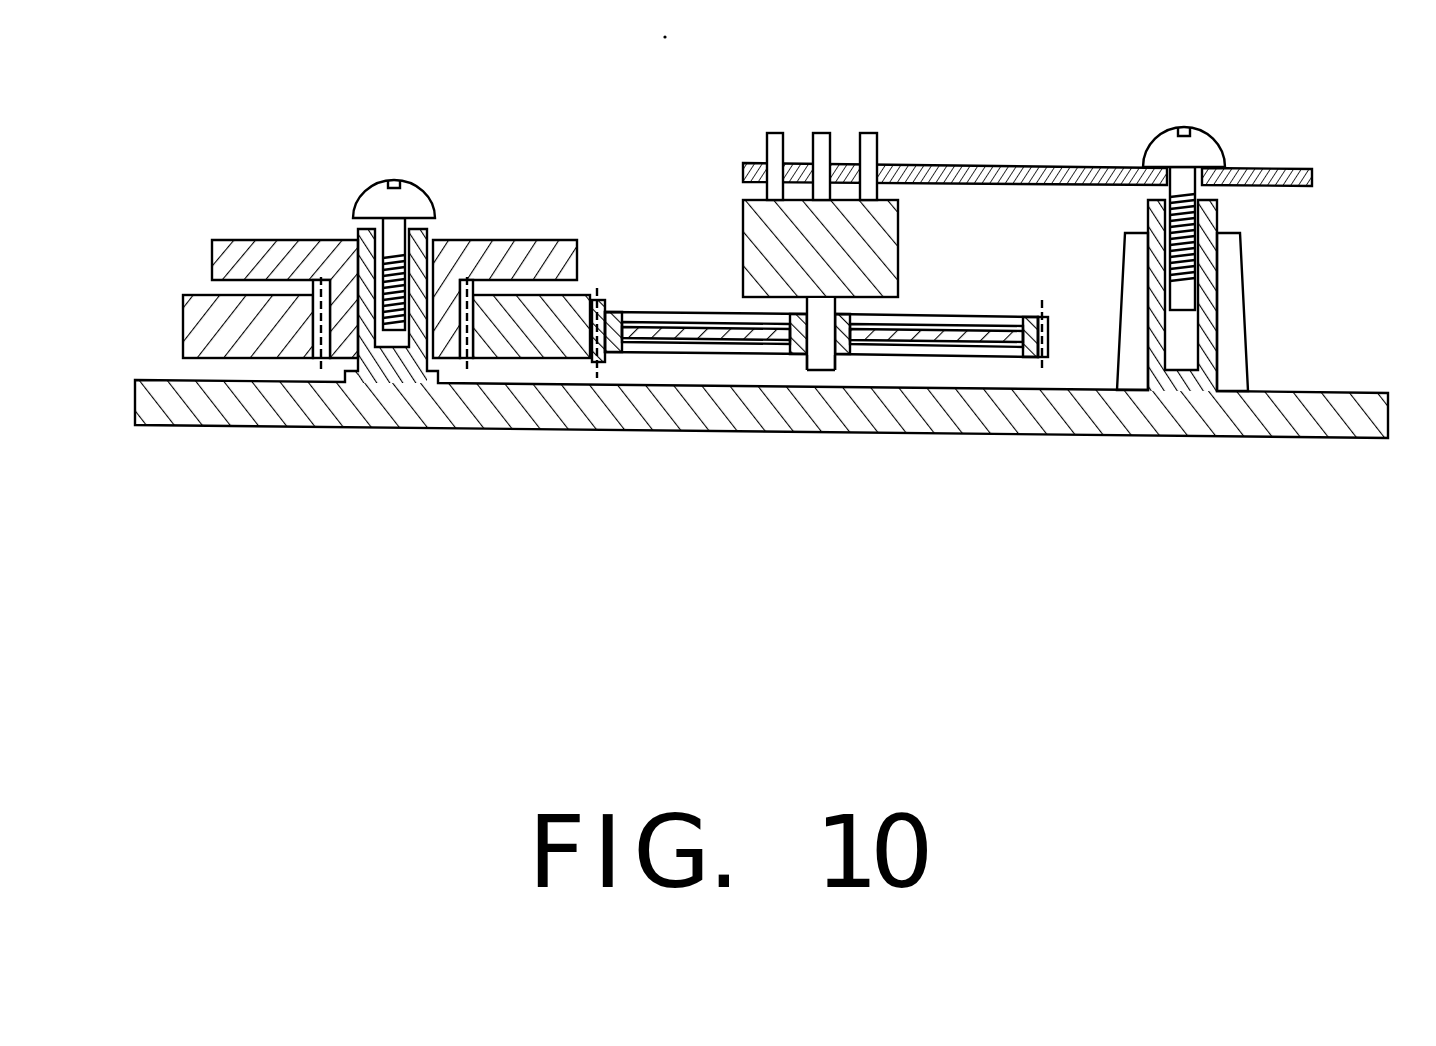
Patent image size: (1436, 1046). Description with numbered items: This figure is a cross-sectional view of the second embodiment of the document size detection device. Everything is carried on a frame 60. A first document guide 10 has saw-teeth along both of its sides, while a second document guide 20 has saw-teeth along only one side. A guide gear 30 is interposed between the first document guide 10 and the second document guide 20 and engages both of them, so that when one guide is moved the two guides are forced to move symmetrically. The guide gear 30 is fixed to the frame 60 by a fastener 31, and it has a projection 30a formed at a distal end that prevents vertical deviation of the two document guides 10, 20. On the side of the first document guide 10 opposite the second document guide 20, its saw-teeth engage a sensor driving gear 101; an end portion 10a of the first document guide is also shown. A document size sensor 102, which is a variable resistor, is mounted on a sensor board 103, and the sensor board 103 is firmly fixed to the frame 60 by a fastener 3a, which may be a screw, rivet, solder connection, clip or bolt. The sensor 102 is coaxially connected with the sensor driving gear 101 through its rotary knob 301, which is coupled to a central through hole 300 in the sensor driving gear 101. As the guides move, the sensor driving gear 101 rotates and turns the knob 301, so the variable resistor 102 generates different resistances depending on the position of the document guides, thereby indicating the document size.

The frame 60 is at (1272, 438).
The projection 30a is at (272, 252).
The guide gear 30 is at (473, 218).
The fastener 31 is at (418, 198).
The second document guide 20 is at (183, 326).
The first document guide 10 is at (542, 348).
The end flange 10a is at (597, 366).
The sensor driving gear 101 is at (992, 313).
The document size sensor 102 is at (742, 247).
The sensor board 103 is at (1312, 178).
The fastener 3a is at (1208, 143).
The central through hole 300 is at (796, 345).
The knob 301 is at (835, 365).